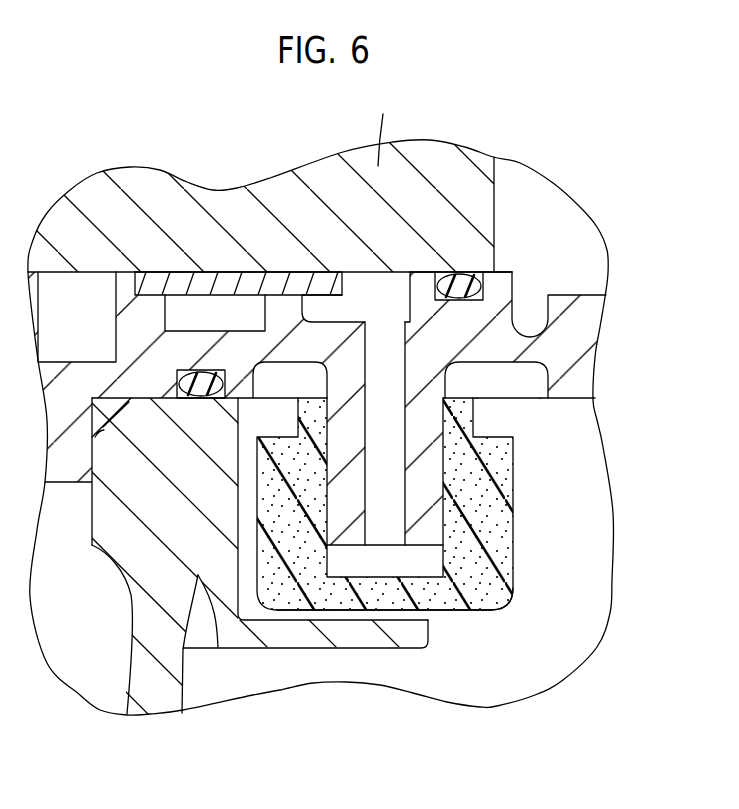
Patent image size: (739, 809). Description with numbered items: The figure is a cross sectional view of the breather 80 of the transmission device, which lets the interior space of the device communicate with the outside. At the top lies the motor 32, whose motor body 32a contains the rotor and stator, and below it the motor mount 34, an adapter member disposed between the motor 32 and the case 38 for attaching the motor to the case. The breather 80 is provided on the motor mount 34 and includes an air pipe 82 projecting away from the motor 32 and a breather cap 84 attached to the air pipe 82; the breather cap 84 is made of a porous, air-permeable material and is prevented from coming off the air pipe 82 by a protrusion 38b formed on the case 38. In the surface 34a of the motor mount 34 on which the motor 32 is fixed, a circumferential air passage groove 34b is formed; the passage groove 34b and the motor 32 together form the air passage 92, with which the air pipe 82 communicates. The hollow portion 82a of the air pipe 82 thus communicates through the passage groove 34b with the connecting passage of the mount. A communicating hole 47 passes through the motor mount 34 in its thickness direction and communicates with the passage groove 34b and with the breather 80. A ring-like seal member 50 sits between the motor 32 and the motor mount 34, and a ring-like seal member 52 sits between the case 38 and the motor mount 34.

The motor 32 is at (508, 225).
The motor body 32a is at (385, 128).
The motor mount 34 is at (573, 411).
The surface 34a is at (421, 271).
The air passage groove 34b is at (354, 320).
The air passage 92 is at (328, 312).
The seal member 50 is at (479, 288).
The seal member 52 is at (193, 395).
The communicating hole 47 is at (386, 348).
The case 38 is at (289, 662).
The protrusion 38b is at (363, 635).
The breather 80 is at (527, 562).
The air pipe 82 is at (416, 485).
The hollow portion 82a is at (388, 512).
The breather cap 84 is at (478, 590).